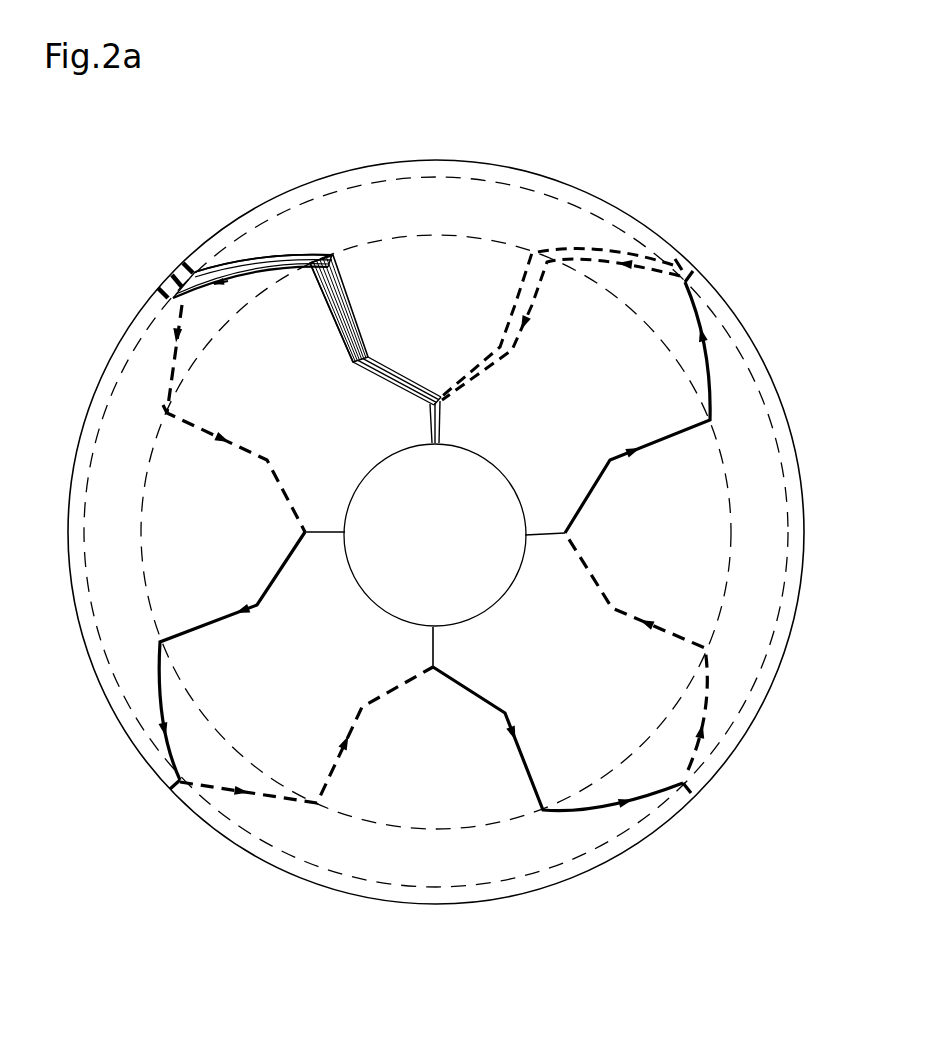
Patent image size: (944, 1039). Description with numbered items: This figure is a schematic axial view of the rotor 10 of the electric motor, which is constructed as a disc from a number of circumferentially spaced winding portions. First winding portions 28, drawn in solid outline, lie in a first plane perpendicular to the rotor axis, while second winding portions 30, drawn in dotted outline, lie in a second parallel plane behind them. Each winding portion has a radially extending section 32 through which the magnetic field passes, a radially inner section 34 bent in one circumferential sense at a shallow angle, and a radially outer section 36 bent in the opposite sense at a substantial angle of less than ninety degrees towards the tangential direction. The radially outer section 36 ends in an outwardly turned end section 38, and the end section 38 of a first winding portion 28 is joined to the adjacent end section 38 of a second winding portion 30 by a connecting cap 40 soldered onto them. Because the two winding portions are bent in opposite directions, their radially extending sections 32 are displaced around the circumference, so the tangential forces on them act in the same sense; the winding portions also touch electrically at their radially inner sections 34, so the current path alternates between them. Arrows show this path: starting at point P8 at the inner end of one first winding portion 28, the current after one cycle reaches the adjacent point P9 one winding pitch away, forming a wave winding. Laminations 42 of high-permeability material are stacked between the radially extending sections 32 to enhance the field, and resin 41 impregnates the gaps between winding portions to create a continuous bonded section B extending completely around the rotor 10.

The rotor 10 is at (252, 880).
The first winding portion 28 is at (352, 257).
The second winding portion 30 is at (515, 305).
The radially extending section 32 is at (333, 300).
The radially inner section 34 is at (397, 404).
The radially outer section 36 is at (237, 280).
The end section 38 is at (197, 273).
The connecting cap 40 is at (183, 263).
The resin 41 is at (278, 252).
The laminations 42 is at (350, 307).
The continuous bonded section B is at (787, 550).
The starting point P8 is at (433, 443).
The adjacent point P9 is at (437, 443).